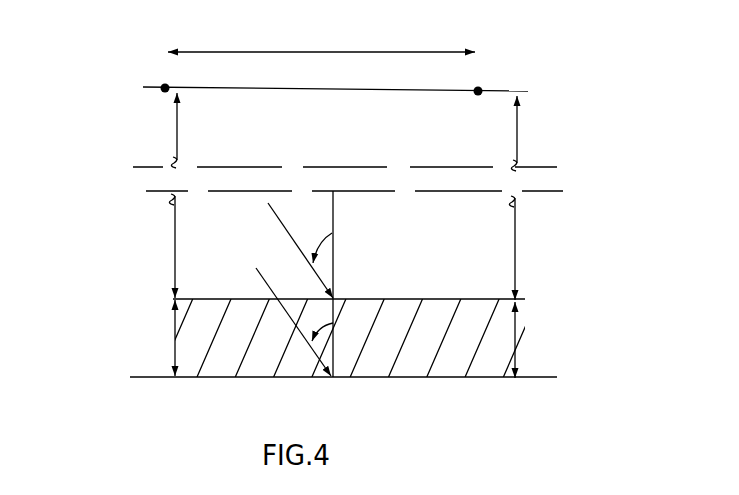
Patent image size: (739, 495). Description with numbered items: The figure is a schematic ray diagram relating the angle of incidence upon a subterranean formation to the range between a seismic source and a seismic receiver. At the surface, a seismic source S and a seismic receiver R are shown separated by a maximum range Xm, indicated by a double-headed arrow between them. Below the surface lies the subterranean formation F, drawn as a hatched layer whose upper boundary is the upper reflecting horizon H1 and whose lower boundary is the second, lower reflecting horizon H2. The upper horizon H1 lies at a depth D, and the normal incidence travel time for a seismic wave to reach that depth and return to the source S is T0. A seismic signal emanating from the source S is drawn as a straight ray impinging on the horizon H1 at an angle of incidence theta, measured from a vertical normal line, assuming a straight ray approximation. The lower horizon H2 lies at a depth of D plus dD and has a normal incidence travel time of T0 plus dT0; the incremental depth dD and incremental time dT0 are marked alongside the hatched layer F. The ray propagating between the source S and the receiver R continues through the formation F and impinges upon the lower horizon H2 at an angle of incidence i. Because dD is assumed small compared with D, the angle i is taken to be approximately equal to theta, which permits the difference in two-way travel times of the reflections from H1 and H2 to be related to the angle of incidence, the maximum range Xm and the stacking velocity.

The seismic source S is at (159, 68).
The seismic receiver R is at (484, 70).
The maximum range Xm is at (321, 38).
The normal incidence travel time T0 is at (158, 246).
The depth D is at (521, 248).
The upper reflecting horizon H1 is at (492, 300).
The lower reflecting horizon H2 is at (492, 379).
The subterranean formation F is at (173, 349).
The incremental normal incidence travel time dT0 is at (150, 338).
The incremental depth dD is at (534, 340).
The angle of incidence theta is at (307, 250).
The angle of incidence at lower horizon i is at (336, 313).